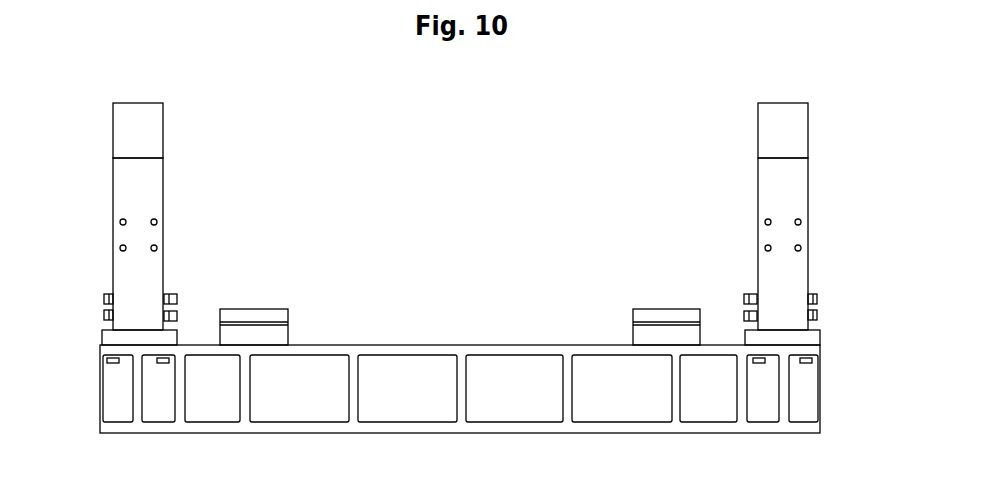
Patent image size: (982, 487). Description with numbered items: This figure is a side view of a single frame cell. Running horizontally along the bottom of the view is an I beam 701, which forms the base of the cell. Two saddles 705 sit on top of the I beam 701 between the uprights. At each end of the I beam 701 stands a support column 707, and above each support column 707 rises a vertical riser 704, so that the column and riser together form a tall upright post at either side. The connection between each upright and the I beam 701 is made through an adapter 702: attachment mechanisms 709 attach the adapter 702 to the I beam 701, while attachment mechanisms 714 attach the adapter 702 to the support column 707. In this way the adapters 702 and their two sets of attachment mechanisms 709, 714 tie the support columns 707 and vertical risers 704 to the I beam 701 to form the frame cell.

The I beam 701 is at (313, 415).
The adapter 702 is at (141, 337).
The vertical riser 704 is at (776, 132).
The saddle 705 is at (658, 313).
The support column 707 is at (770, 189).
The attachment mechanism 709 is at (163, 363).
The attachment mechanism 714 is at (177, 313).